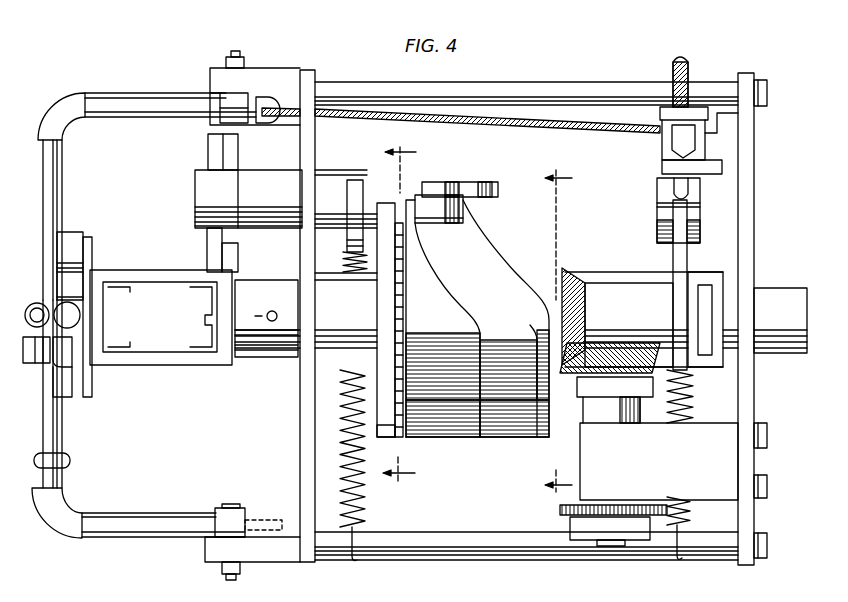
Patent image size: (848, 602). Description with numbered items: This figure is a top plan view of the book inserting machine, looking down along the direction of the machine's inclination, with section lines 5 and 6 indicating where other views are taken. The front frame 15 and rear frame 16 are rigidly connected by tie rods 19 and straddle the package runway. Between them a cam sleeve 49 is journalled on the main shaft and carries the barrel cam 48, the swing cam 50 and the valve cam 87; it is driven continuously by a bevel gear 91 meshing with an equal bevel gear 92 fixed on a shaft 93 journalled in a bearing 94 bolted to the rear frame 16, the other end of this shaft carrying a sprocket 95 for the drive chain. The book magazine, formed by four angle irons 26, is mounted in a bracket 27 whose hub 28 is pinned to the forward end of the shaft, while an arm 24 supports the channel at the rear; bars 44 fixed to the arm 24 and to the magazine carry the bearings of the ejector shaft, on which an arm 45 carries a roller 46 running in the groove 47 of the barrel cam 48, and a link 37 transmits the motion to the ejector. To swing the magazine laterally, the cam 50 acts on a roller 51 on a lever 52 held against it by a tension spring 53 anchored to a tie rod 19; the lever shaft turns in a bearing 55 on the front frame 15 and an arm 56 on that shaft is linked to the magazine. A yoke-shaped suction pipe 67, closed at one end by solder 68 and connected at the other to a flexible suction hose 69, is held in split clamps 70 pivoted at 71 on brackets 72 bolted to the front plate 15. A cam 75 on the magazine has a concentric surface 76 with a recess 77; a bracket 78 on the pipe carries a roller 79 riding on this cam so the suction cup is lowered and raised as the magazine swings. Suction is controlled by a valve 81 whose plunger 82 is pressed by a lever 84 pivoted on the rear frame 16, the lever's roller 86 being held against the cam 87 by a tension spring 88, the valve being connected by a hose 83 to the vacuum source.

The section line 5- 5 is at (558, 327).
The section line 6- 6 is at (399, 315).
The front frame 15 is at (298, 243).
The rear frame 16 is at (749, 368).
The tie rods 19 is at (553, 82).
The arm 24 is at (714, 307).
The angle irons 26 is at (195, 345).
The bracket 27 is at (166, 272).
The hub 28 is at (262, 362).
The link 37 is at (80, 318).
The bars 44 is at (324, 281).
The arm 45 is at (478, 185).
The roller 46 is at (465, 216).
The groove 47 is at (482, 266).
The barrel cam 48 is at (452, 415).
The cam sleeve 49 is at (407, 305).
The cam 50 is at (388, 440).
The roller 51 is at (387, 309).
The lever 52 is at (352, 228).
The tension spring 53 is at (366, 496).
The bearing 55 is at (261, 178).
The arm 56 is at (226, 146).
The suction pipe 67 is at (60, 178).
The solder 68 is at (280, 518).
The flexible suction hose 69 is at (347, 117).
The split clamps 70 is at (249, 98).
The pivots 71 is at (236, 55).
The brackets 72 is at (283, 76).
The cam 75 is at (92, 378).
The surface 76 is at (68, 236).
The recess 77 is at (89, 266).
The bracket 78 is at (60, 420).
The roller 79 is at (74, 396).
The valve 81 is at (707, 140).
The plunger 82 is at (665, 186).
The hose 83 is at (692, 73).
The lever 84 is at (658, 222).
The roller 86 is at (684, 213).
The cam 87 is at (702, 290).
The tension spring 88 is at (690, 512).
The bevel gear 91 is at (583, 270).
The bevel gear 92 is at (607, 345).
The shaft 93 is at (615, 548).
The bearing 94 is at (640, 451).
The sprocket 95 is at (560, 513).